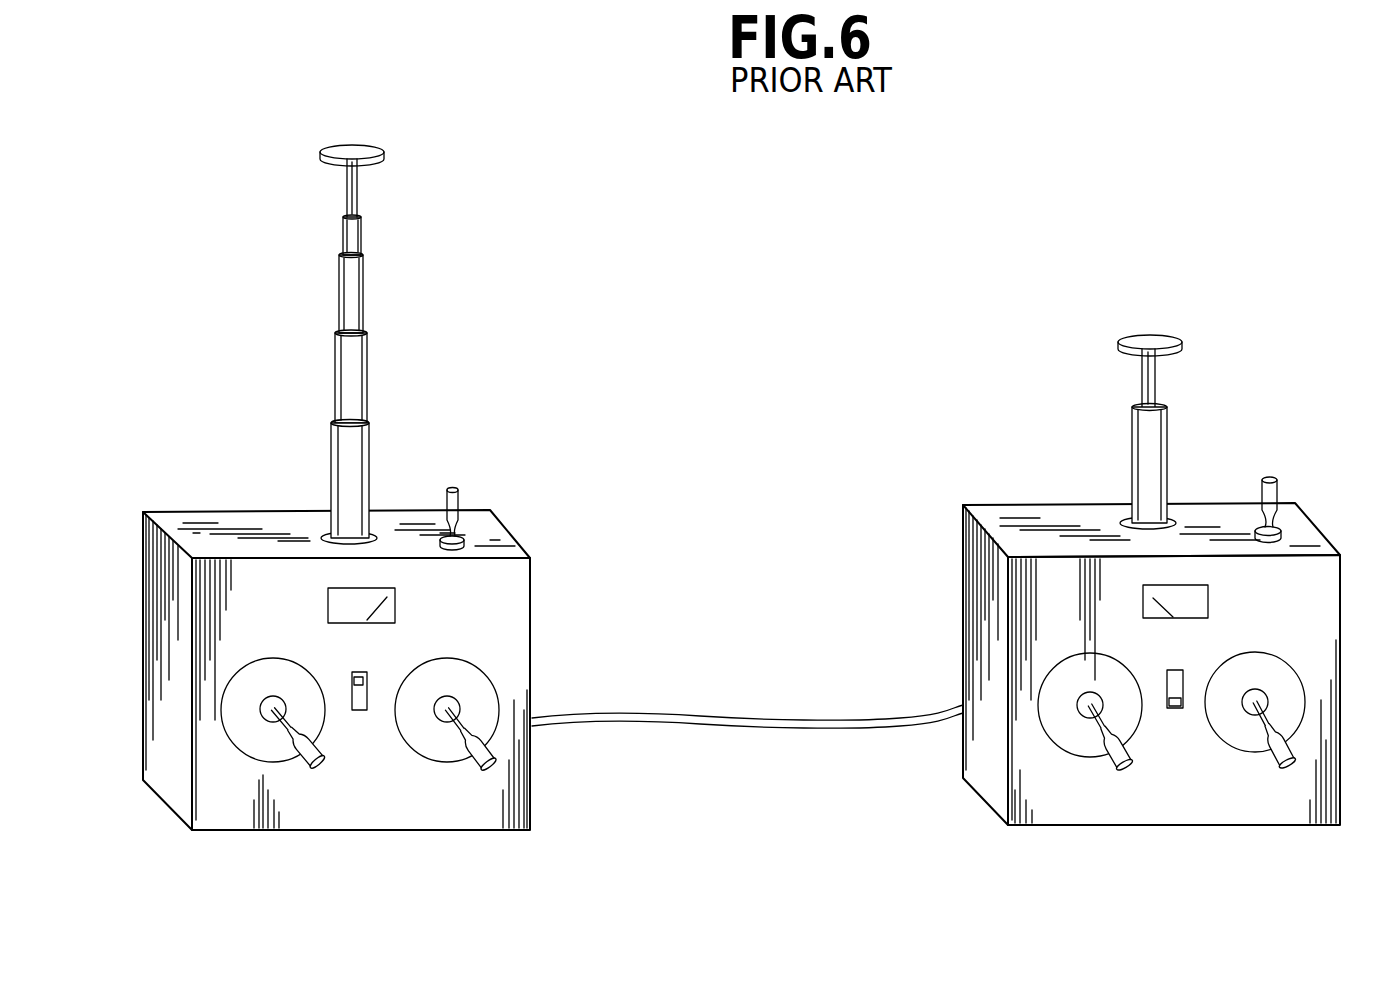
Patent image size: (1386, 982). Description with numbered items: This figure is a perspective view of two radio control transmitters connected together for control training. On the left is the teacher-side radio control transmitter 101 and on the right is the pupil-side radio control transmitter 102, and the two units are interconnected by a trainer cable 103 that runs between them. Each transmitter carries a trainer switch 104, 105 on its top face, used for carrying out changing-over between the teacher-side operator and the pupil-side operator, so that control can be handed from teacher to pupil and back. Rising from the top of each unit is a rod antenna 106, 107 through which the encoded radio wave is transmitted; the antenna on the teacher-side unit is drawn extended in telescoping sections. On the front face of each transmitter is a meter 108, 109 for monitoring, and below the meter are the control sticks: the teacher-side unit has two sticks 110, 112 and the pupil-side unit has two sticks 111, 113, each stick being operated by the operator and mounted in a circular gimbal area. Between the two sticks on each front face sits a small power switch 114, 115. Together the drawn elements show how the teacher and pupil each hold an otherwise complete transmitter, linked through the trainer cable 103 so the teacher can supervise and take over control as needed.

The teacher-side radio control transmitter 101 is at (388, 813).
The pupil-side radio control transmitter 102 is at (1190, 808).
The trainer cable 103 is at (740, 728).
The trainer switch 104 is at (457, 483).
The trainer switch 105 is at (1277, 487).
The rod antenna 106 is at (360, 377).
The rod antenna 107 is at (1167, 438).
The meter 108 is at (396, 599).
The meter 109 is at (1208, 600).
The stick 110 is at (327, 763).
The stick 111 is at (1123, 773).
The stick 112 is at (485, 768).
The stick 113 is at (1287, 767).
The power switch 114 is at (363, 670).
The power switch 115 is at (1180, 665).